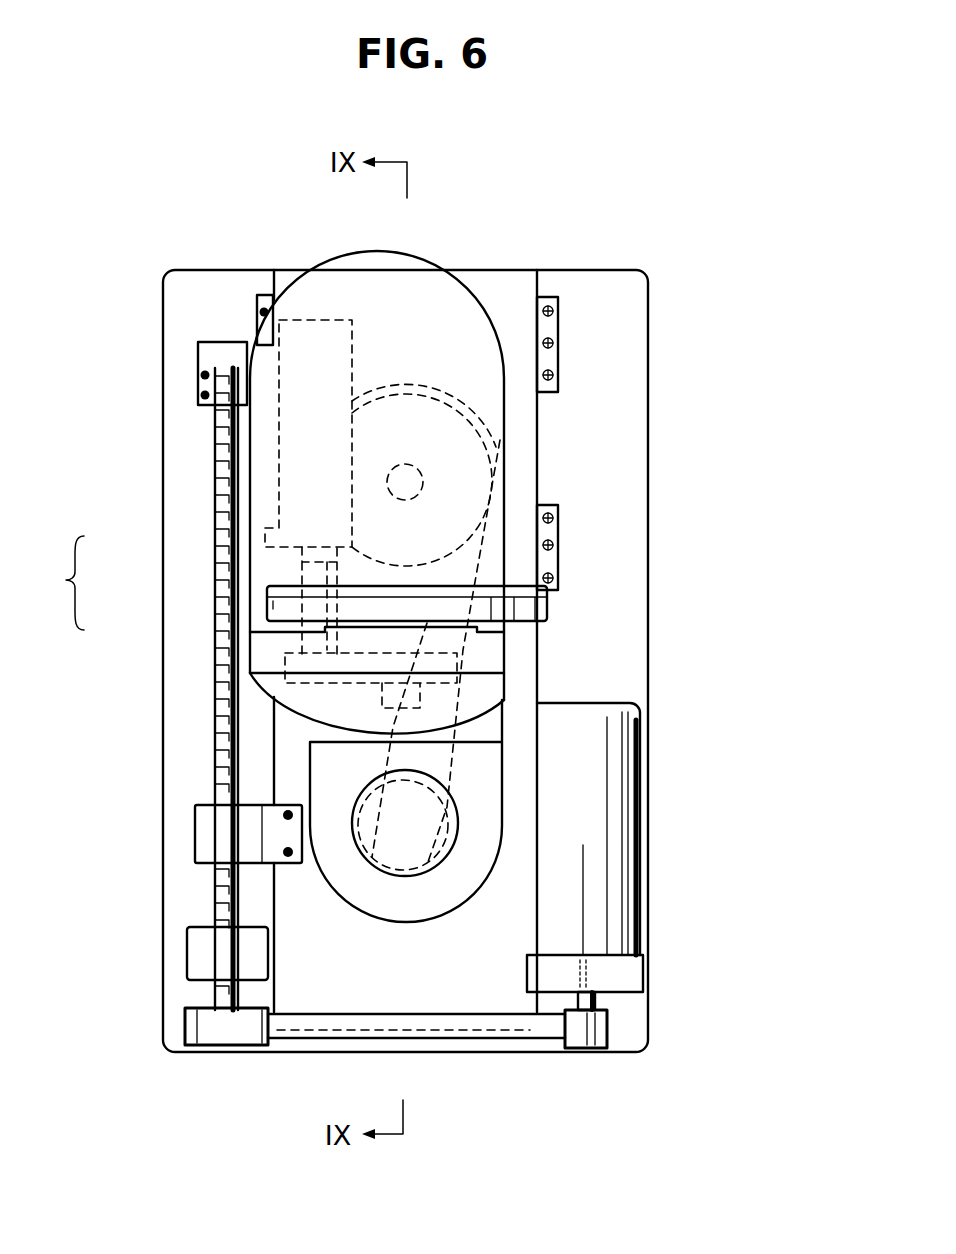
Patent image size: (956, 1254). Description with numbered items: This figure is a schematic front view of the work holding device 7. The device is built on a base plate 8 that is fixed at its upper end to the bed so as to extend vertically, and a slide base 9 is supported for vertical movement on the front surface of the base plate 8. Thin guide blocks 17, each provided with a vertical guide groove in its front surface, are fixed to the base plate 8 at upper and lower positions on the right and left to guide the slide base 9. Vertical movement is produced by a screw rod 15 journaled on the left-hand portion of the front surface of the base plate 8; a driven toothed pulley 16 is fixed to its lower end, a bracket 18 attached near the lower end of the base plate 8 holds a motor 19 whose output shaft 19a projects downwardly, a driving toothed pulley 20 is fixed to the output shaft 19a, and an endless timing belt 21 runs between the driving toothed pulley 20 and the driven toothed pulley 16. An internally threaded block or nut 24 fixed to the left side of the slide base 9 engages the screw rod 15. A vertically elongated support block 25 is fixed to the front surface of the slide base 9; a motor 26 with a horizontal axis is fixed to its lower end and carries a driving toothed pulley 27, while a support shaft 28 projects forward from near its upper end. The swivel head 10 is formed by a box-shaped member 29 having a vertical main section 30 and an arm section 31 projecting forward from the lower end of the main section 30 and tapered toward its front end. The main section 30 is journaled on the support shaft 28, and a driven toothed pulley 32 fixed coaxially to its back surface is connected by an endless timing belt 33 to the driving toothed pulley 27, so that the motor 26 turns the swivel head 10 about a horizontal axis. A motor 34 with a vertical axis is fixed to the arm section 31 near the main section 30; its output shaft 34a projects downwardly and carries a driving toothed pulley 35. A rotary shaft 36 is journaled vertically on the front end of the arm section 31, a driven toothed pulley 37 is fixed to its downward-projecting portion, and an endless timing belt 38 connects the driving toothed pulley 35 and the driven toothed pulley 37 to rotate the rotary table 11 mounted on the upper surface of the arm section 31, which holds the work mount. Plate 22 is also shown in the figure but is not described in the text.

The work holding device 7 is at (644, 208).
The base plate 8 is at (648, 470).
The slide base 9 is at (533, 422).
The swivel head 10 is at (503, 667).
The rotary table 11 is at (547, 609).
The screw rod 15 is at (215, 692).
The driven toothed pulley 16 is at (253, 1045).
The guide blocks 17 is at (263, 296).
The bracket 18 is at (632, 967).
The motor 19 is at (632, 893).
The output shaft 19a is at (595, 1007).
The driving toothed pulley 20 is at (597, 1048).
The endless timing belt 21 is at (550, 1038).
The mounting plate 22 is at (500, 273).
The internally threaded block or nut 24 is at (196, 830).
The support block 25 is at (502, 795).
The motor 26 is at (410, 876).
The driving toothed pulley 27 is at (443, 860).
The support shaft 28 is at (407, 462).
The box-shaped member 29 is at (57, 583).
The main section 30 is at (267, 590).
The arm section 31 is at (300, 655).
The driven toothed pulley 32 is at (386, 400).
The endless timing belt 33 is at (460, 653).
The motor 34 is at (322, 320).
The output shaft 34a is at (297, 567).
The driving toothed pulley 35 is at (297, 707).
The rotary shaft 36 is at (337, 560).
The driven toothed pulley 37 is at (460, 693).
The endless timing belt 38 is at (285, 656).